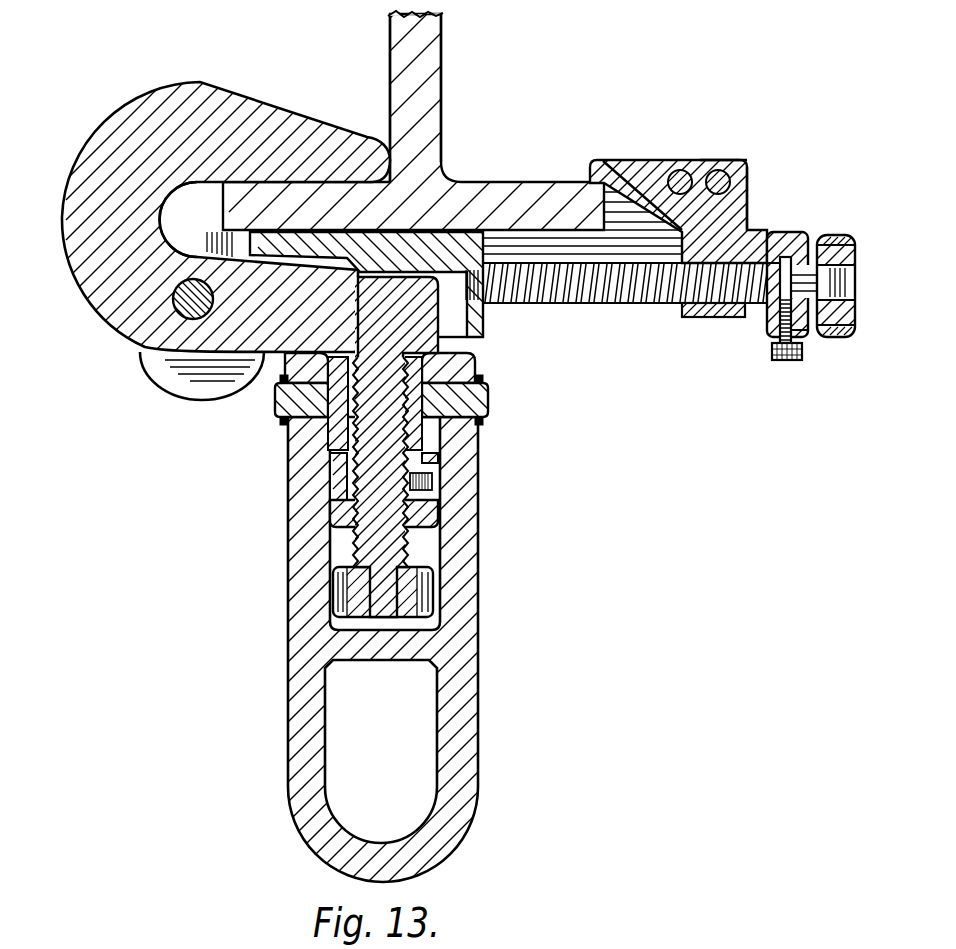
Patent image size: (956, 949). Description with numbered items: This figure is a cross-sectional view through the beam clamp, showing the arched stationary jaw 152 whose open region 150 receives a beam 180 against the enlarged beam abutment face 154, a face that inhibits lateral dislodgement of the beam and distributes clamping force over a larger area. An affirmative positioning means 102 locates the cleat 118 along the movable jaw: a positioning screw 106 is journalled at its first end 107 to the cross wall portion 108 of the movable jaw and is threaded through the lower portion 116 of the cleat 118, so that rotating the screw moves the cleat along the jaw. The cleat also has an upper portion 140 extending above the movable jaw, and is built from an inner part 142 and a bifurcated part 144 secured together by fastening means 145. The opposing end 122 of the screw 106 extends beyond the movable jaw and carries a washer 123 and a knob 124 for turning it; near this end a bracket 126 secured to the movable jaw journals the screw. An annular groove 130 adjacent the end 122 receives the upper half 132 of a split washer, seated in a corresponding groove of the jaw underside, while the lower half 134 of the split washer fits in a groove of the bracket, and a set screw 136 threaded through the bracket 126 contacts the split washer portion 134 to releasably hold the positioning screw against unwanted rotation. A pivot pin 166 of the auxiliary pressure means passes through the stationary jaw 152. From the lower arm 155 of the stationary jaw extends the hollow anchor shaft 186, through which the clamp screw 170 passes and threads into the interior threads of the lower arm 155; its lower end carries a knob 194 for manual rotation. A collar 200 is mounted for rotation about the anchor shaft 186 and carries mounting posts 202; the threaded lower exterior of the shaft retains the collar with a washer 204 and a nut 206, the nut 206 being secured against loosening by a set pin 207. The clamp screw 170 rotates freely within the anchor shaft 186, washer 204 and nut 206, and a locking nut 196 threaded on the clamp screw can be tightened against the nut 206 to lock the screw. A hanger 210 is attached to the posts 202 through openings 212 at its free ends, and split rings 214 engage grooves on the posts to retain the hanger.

The affirmative positioning means 102 is at (787, 372).
The positioning screw 106 is at (638, 308).
The first end 107 is at (488, 313).
The cross wall portion 108 is at (488, 332).
The lower portion 116 is at (701, 318).
The cleat 118 is at (731, 154).
The opposing end 122 is at (846, 280).
The washer 123 is at (838, 238).
The knob 124 is at (857, 257).
The bracket 126 is at (804, 348).
The annular groove 130 is at (805, 333).
The upper half of split washer 132 is at (796, 243).
The lower half of split washer 134 is at (768, 327).
The set screw 136 is at (781, 361).
The upper portion 140 is at (748, 174).
The inner part 142 is at (742, 203).
The bifurcated part 144 is at (611, 160).
The fastening means 145 is at (713, 170).
The open region 150 is at (178, 206).
The stationary jaw 152 is at (148, 103).
The beam abutment face 154 is at (390, 158).
The lower arm 155 is at (174, 305).
The pivot pin 166 is at (176, 310).
The clamp screw 170 is at (362, 547).
The beam 180 is at (442, 52).
The anchor shaft 186 is at (330, 455).
The knob 194 is at (432, 594).
The locking nut 196 is at (432, 510).
The collar 200 is at (479, 440).
The mounting posts 202 is at (494, 404).
The washer 204 is at (430, 459).
The nut 206 is at (330, 498).
The set pin 207 is at (437, 488).
The hanger 210 is at (297, 677).
The openings 212 is at (328, 428).
The split rings 214 is at (489, 382).